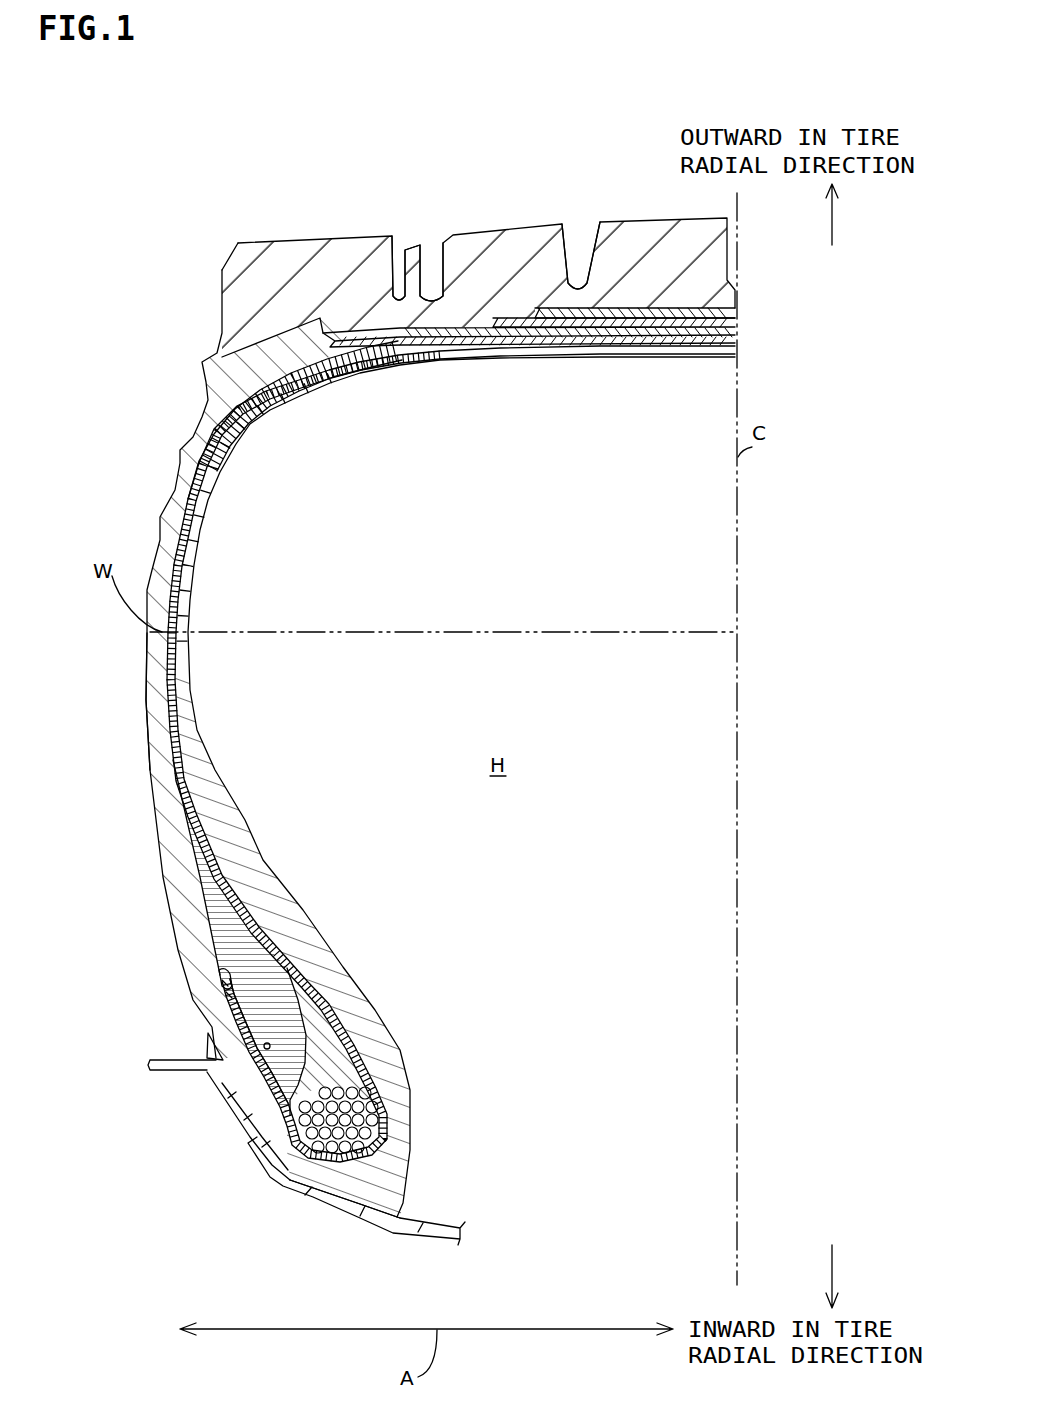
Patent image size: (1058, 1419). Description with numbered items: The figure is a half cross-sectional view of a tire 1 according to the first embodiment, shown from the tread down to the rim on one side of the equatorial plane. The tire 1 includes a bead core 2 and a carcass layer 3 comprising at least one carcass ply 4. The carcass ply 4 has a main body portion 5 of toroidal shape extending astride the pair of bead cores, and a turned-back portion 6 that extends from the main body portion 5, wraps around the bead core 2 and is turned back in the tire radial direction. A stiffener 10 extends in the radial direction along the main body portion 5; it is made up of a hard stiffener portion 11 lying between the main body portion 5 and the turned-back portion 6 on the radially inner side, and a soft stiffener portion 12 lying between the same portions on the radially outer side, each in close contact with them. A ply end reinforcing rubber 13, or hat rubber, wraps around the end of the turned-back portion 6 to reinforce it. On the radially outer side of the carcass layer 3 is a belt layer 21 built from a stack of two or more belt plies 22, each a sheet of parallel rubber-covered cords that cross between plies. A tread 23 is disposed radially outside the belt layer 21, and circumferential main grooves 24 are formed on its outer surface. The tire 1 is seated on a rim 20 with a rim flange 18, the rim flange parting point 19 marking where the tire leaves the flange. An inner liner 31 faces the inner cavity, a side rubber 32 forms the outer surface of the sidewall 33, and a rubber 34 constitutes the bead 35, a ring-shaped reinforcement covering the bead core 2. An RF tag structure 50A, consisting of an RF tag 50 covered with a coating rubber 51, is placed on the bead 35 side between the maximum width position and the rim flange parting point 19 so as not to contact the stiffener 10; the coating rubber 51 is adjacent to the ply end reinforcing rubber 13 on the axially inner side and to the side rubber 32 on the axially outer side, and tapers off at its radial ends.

The tire 1 is at (214, 277).
The bead core 2 is at (363, 1122).
The carcass layer 3 is at (297, 403).
The carcass ply 4 is at (178, 567).
The main body portion 5 is at (226, 497).
The turned-back portion 6 is at (264, 1048).
The stiffener 10 is at (310, 937).
The hard stiffener portion 11 is at (322, 1032).
The soft stiffener portion 12 is at (240, 937).
The ply end reinforcing rubber 13 is at (237, 1017).
The rim flange 18 is at (172, 1072).
The rim flange parting point 19 is at (205, 1050).
The rim 20 is at (338, 1217).
The belt layer 21 is at (673, 295).
The belt ply 22 is at (677, 348).
The tread 23 is at (497, 265).
The main groove 24 is at (400, 246).
The inner liner 31 is at (217, 807).
The side rubber 32 is at (160, 820).
The sidewall 33 is at (136, 739).
The bead rubber 34 is at (272, 1152).
The bead 35 is at (232, 1106).
The RF tag 50 is at (209, 982).
The RF tag structure 50A is at (224, 985).
The coating rubber 51 is at (228, 992).